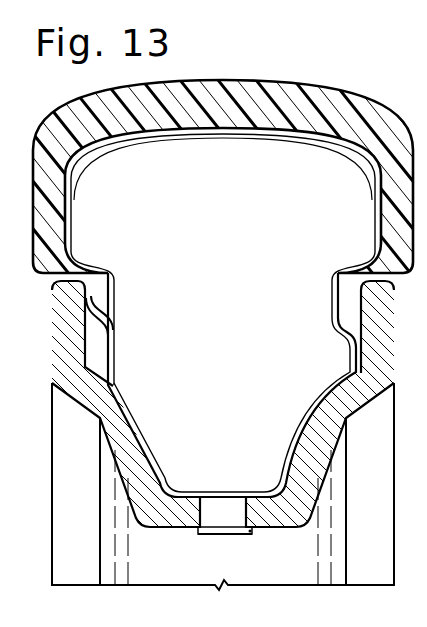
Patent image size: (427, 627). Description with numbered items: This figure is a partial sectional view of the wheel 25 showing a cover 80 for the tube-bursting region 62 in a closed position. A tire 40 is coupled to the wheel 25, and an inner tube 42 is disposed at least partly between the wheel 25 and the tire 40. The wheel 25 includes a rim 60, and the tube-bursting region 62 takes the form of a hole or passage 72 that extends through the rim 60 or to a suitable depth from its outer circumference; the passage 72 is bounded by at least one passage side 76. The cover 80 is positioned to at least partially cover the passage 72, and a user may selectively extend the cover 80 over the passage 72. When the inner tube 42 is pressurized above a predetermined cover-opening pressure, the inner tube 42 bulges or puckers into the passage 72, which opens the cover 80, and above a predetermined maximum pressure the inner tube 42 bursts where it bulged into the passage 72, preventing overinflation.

The wheel 25 is at (68, 533).
The tire 40 is at (202, 90).
The inner tube 42 is at (102, 177).
The rim 60 is at (72, 326).
The tube-bursting region 62 is at (241, 550).
The passage 72 is at (227, 510).
The passage side 76 is at (211, 512).
The cover 80 is at (223, 535).